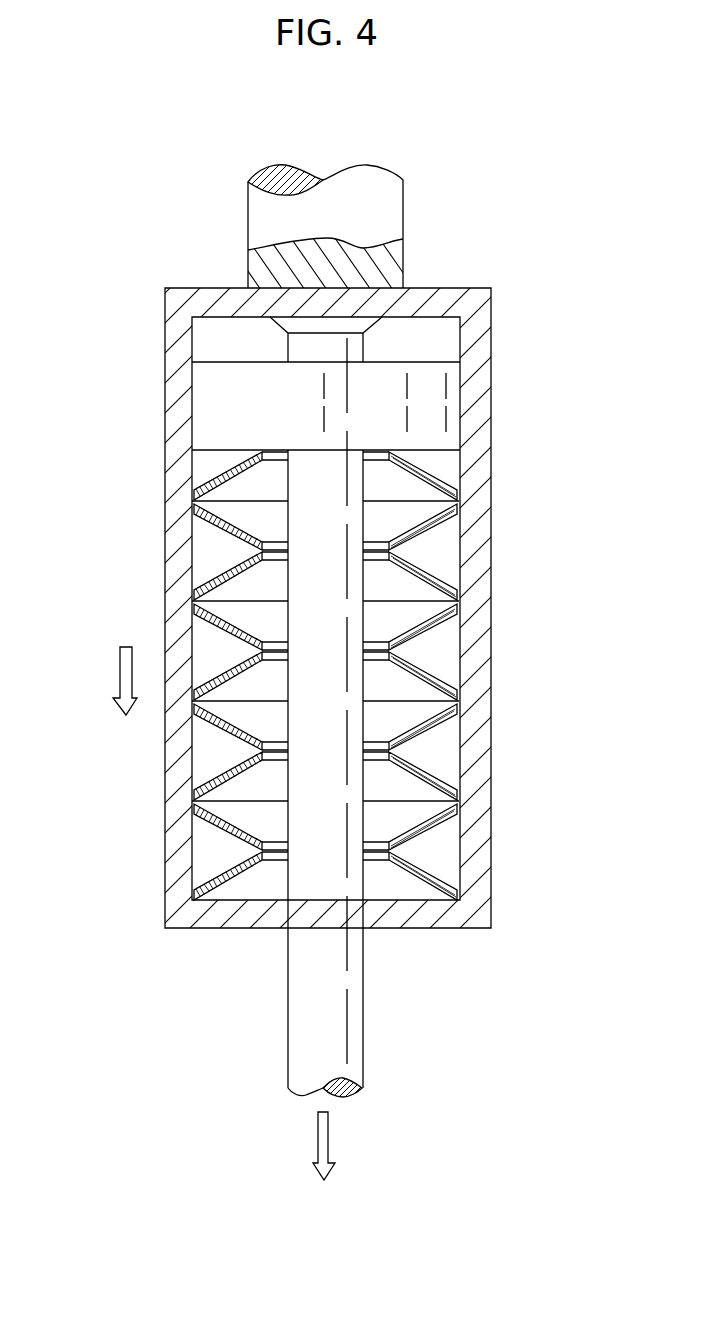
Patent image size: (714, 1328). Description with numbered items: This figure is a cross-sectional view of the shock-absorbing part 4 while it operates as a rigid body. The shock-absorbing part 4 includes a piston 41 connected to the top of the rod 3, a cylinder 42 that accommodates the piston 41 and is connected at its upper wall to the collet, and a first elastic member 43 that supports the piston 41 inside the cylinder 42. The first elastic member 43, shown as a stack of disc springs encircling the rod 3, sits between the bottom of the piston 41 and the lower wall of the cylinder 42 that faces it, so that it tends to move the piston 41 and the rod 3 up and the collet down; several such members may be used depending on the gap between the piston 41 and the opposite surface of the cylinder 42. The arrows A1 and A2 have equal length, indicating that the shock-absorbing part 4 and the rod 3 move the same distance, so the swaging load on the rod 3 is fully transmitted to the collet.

The rod 3 is at (305, 1018).
The shock-absorbing part 4 is at (521, 207).
The piston 41 is at (432, 408).
The cylinder 42 is at (475, 455).
The first elastic member 43 is at (432, 623).
The movement distance of shock-absorbing part A1 is at (120, 670).
The movement distance of rod A2 is at (318, 1133).